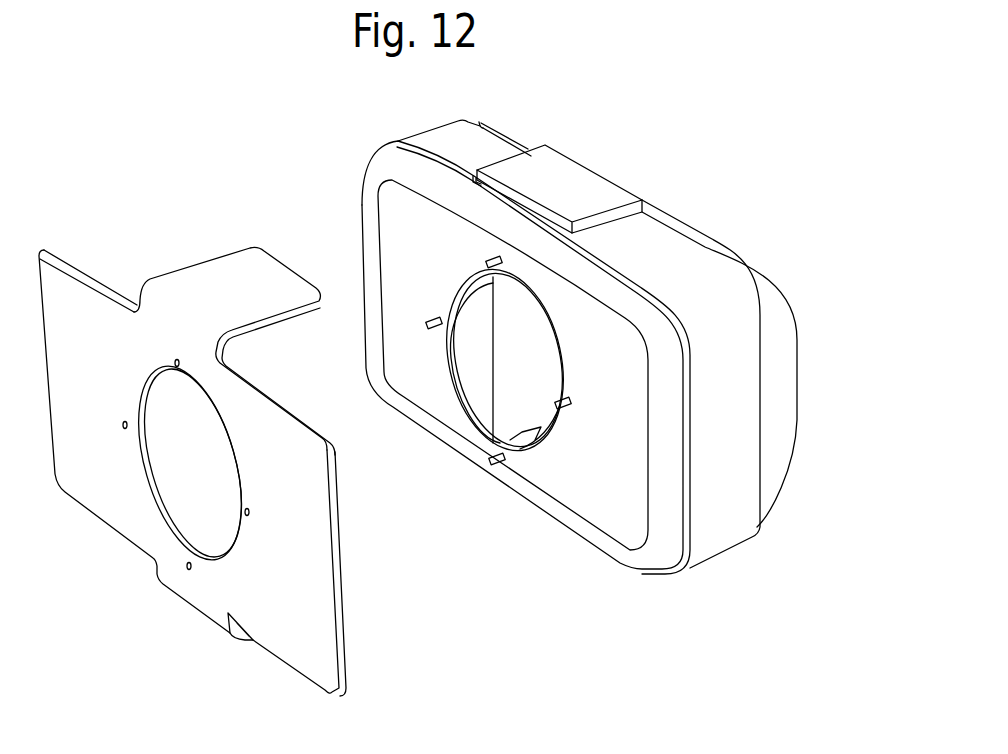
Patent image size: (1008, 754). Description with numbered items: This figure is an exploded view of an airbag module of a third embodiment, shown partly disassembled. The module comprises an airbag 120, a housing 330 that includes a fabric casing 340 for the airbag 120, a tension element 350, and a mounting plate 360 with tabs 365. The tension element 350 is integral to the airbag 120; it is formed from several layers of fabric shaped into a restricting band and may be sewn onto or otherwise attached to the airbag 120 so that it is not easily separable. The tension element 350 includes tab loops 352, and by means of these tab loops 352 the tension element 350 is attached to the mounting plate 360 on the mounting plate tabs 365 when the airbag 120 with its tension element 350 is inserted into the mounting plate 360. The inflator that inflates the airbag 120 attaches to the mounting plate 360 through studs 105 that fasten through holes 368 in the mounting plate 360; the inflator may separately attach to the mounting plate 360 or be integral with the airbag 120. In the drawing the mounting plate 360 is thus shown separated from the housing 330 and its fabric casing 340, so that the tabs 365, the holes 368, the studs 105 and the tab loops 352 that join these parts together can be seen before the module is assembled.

The studs 105 is at (483, 260).
The airbag 120 is at (793, 403).
The housing 330 is at (800, 280).
The fabric casing 340 is at (797, 348).
The tension element 350 is at (678, 247).
The tab loops 352 is at (502, 194).
The mounting plate 360 is at (346, 575).
The tabs 365 is at (210, 272).
The holes 368 is at (174, 362).